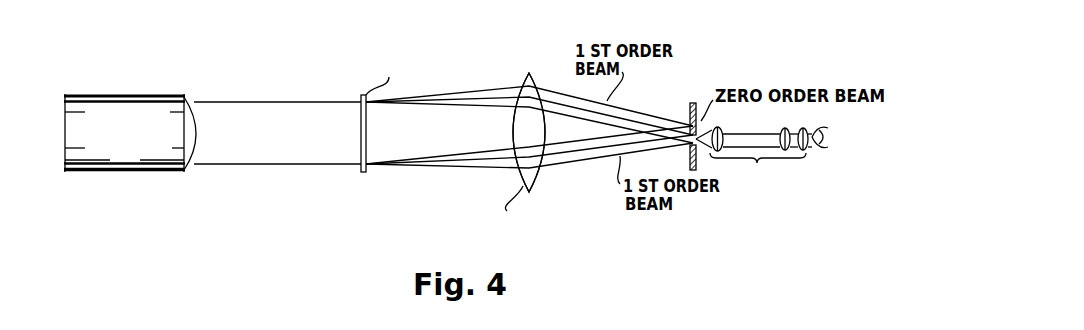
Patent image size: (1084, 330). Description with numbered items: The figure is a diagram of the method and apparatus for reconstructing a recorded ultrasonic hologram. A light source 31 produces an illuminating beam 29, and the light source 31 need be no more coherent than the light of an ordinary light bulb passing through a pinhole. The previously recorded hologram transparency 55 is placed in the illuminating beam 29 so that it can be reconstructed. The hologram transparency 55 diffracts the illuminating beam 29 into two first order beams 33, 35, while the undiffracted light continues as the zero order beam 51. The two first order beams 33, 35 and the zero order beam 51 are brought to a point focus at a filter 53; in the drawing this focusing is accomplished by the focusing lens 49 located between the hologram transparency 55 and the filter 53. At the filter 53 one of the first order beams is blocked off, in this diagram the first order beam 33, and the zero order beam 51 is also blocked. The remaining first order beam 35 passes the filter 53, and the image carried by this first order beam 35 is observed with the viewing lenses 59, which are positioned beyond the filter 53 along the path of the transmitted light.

The light source 31 is at (143, 85).
The illuminating beam 29 is at (241, 85).
The hologram transparency 55 is at (367, 130).
The focusing lens 49 is at (521, 84).
The first order beam 33 is at (558, 70).
The first order beam 35 is at (582, 162).
The zero order beam 51 is at (538, 174).
The filter 53 is at (690, 108).
The viewing lenses 59 is at (806, 158).